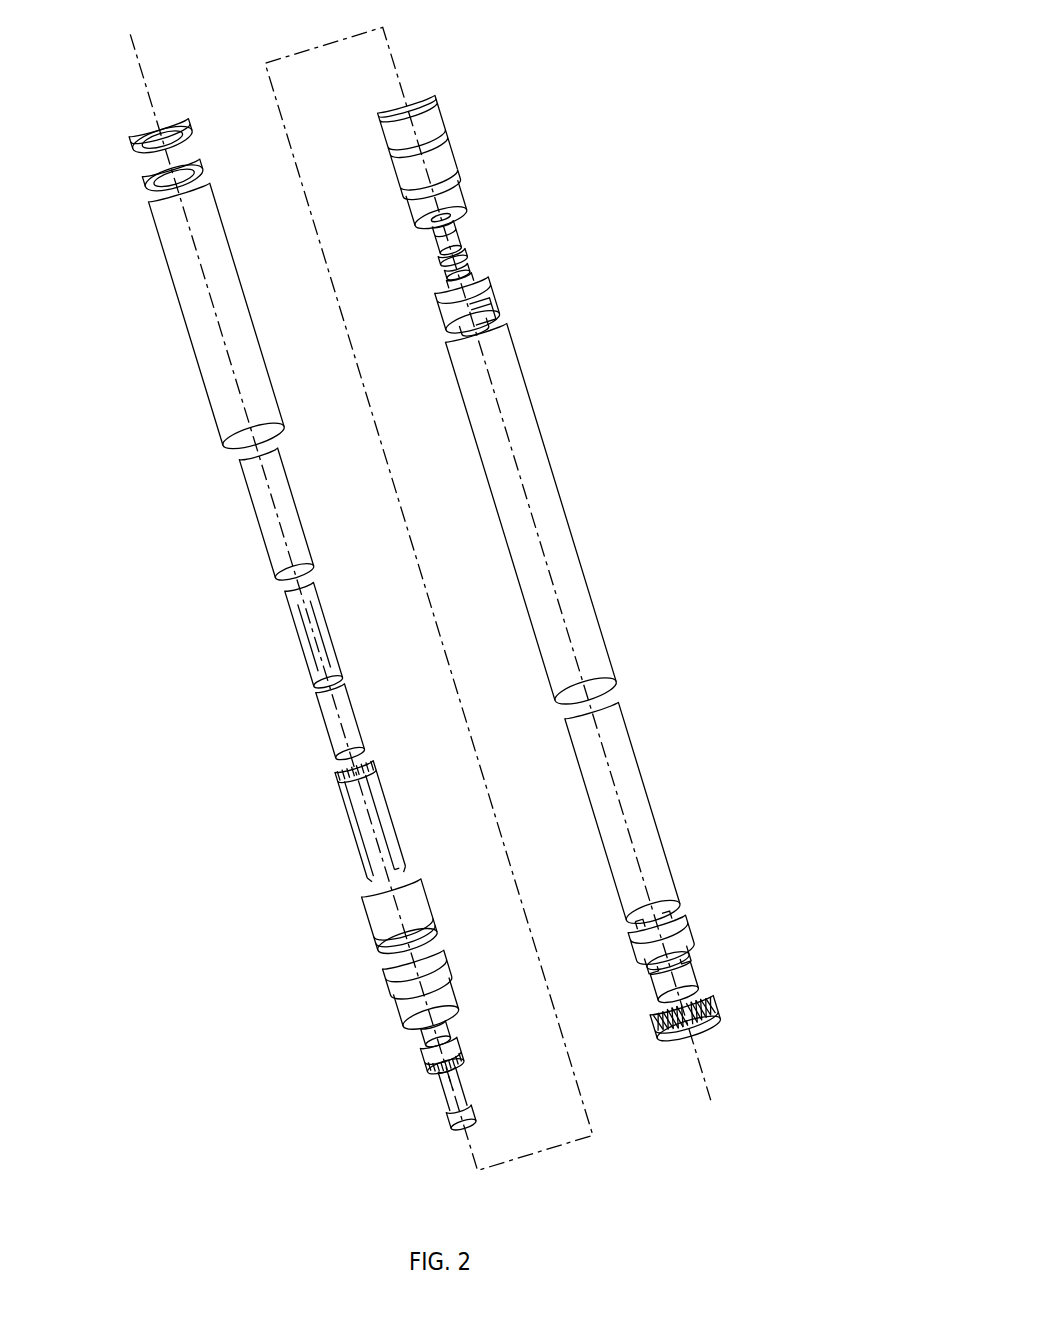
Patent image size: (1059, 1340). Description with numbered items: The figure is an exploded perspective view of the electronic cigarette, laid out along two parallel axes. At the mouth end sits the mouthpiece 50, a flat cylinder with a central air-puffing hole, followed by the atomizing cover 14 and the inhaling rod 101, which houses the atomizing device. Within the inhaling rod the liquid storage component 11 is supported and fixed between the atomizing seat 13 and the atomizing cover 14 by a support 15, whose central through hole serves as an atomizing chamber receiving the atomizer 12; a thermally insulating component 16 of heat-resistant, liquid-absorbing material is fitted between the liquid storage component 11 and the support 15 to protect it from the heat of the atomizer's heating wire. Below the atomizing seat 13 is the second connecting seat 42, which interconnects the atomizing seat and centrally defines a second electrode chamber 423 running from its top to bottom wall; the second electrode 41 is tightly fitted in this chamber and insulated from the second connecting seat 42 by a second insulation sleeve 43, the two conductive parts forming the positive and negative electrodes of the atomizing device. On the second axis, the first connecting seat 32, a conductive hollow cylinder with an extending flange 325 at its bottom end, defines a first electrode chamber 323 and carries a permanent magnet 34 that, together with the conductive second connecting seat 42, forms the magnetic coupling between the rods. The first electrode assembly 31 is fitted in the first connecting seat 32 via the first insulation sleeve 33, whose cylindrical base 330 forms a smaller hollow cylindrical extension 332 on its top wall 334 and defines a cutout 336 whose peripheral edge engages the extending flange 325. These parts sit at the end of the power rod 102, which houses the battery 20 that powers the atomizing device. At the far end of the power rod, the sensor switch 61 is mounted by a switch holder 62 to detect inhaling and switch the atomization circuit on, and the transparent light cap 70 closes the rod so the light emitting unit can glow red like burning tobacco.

The mouthpiece 50 is at (135, 138).
The atomizing cover 14 is at (142, 184).
The inhaling rod 101 is at (205, 351).
The liquid storage component 11 is at (270, 515).
The support 15 is at (305, 634).
The thermally insulating component 16 is at (333, 715).
The atomizer 12 is at (337, 776).
The atomizing seat 13 is at (370, 913).
The second connecting seat 42 is at (397, 980).
The second electrode chamber 423 is at (425, 1032).
The second insulation sleeve 43 is at (425, 1060).
The second electrode 41 is at (448, 1125).
The first connecting seat 32 is at (456, 134).
The extending flange 325 is at (462, 187).
The first electrode chamber 323 is at (415, 187).
The permanent magnet 34 is at (453, 198).
The first electrode assembly 31 is at (458, 235).
The first insulation sleeve 33 is at (539, 268).
The hollow cylindrical extension 332 is at (470, 272).
The top wall 334 is at (482, 285).
The cylindrical base 330 is at (490, 297).
The cutout 336 is at (534, 304).
The power rod 102 is at (540, 468).
The battery 20 is at (640, 797).
The switch holder 62 is at (685, 937).
The sensor switch 61 is at (685, 978).
The light cap 70 is at (703, 1028).